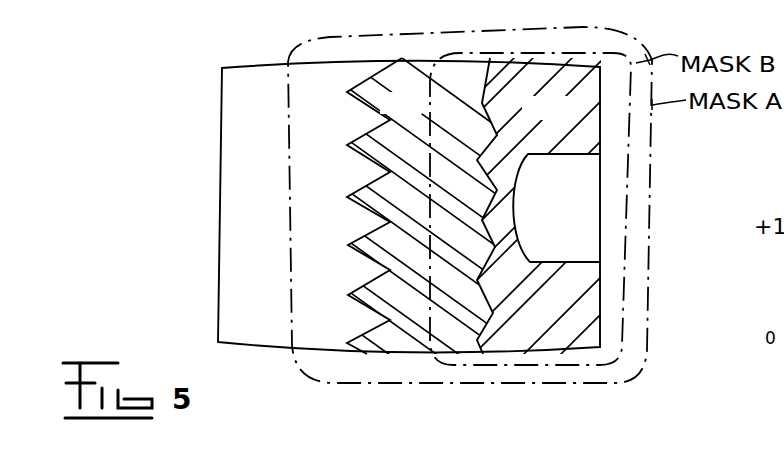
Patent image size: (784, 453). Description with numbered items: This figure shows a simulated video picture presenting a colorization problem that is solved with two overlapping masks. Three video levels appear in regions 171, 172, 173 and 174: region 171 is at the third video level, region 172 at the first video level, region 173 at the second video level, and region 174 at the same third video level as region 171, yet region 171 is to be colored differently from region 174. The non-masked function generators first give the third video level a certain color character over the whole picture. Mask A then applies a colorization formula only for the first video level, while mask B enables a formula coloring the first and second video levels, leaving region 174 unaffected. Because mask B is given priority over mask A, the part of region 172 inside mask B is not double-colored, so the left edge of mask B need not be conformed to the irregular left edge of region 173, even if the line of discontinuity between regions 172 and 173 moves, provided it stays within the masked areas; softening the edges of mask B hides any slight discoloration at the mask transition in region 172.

The region 171 is at (240, 222).
The region 172 is at (405, 74).
The region 173 is at (509, 80).
The region 174 is at (580, 244).